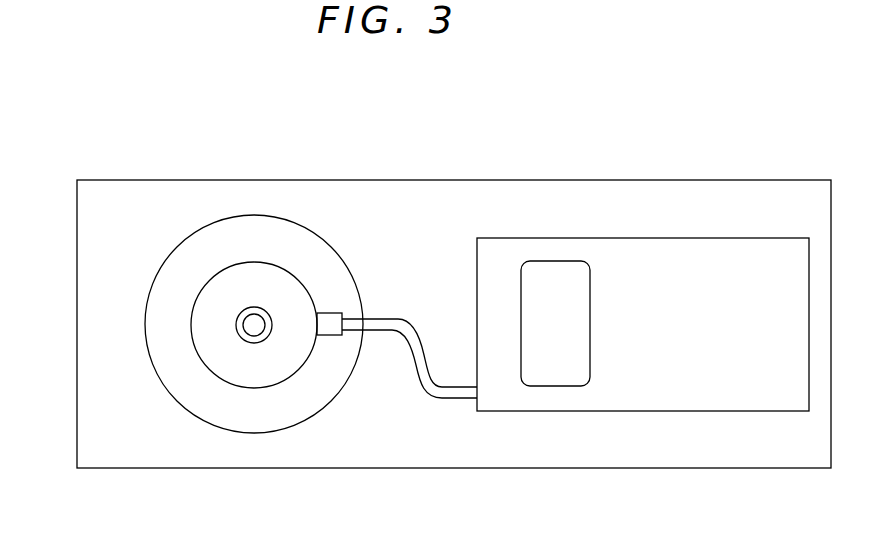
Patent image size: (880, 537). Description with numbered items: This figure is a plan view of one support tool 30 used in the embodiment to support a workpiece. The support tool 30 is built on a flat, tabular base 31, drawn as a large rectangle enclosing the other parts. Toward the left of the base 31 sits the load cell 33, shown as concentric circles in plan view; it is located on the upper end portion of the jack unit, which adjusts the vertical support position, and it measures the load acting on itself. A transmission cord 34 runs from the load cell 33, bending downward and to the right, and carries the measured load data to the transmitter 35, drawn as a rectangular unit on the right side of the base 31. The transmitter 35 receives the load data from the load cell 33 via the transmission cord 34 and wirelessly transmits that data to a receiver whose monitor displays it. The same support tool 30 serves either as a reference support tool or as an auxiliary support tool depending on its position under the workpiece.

The support tool 30 is at (616, 142).
The tabular base 31 is at (77, 238).
The load cell 33 is at (191, 328).
The transmission cord 34 is at (409, 321).
The transmitter 35 is at (786, 238).